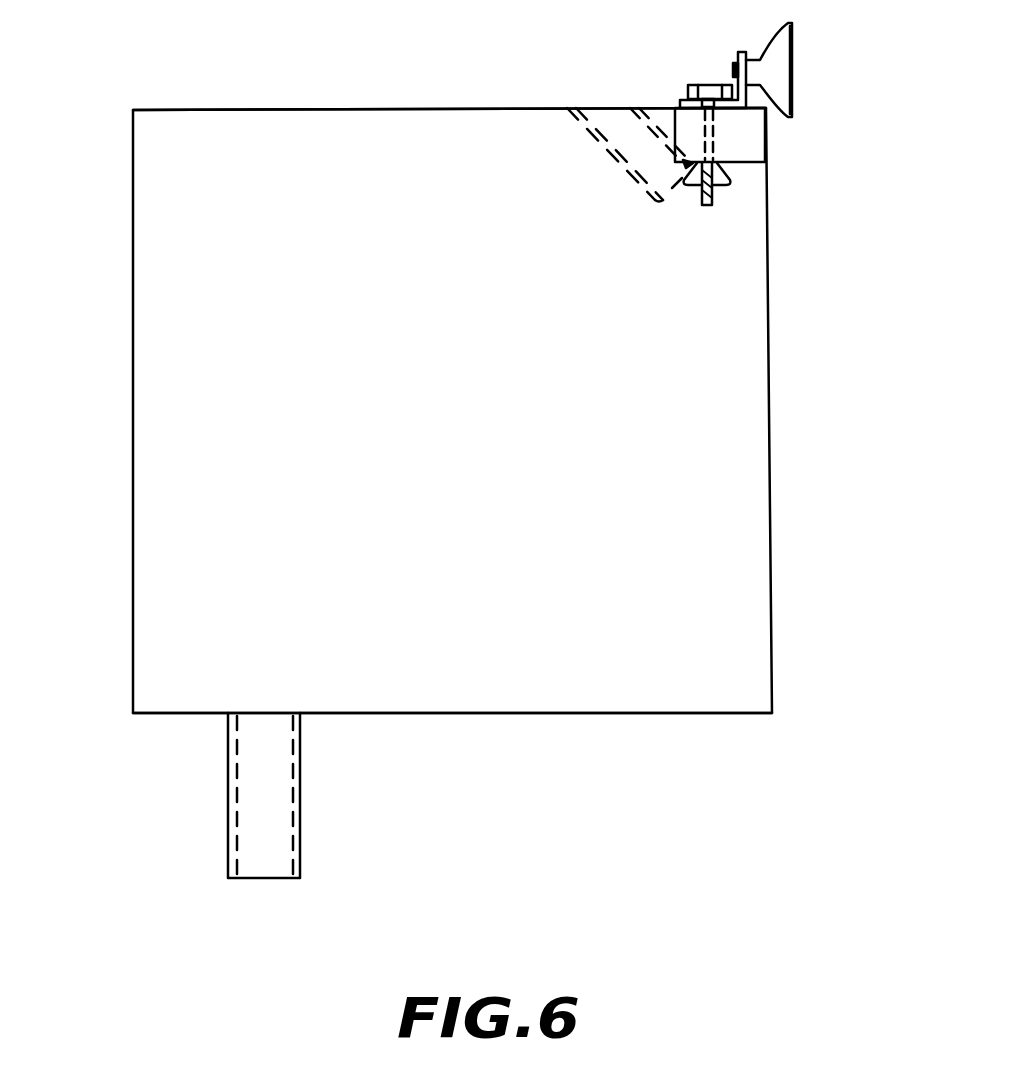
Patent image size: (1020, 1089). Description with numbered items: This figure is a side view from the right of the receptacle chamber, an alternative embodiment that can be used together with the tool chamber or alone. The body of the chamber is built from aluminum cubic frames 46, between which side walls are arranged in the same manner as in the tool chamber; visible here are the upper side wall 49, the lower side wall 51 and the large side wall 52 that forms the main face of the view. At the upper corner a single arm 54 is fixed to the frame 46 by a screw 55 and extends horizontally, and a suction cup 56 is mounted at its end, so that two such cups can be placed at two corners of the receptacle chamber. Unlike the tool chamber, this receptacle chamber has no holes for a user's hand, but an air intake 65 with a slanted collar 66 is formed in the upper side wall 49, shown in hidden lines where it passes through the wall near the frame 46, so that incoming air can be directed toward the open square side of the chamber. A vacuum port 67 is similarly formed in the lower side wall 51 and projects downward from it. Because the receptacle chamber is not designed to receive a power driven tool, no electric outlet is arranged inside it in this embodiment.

The aluminum cubic frame 46 is at (737, 127).
The upper side wall 49 is at (420, 109).
The lower side wall 51 is at (480, 713).
The side wall 52 is at (162, 422).
The single arm 54 is at (733, 90).
The screw 55 is at (707, 207).
The suction cup 56 is at (775, 42).
The air intake 65 is at (602, 108).
The slanted collar 66 is at (610, 155).
The vacuum port 67 is at (300, 770).